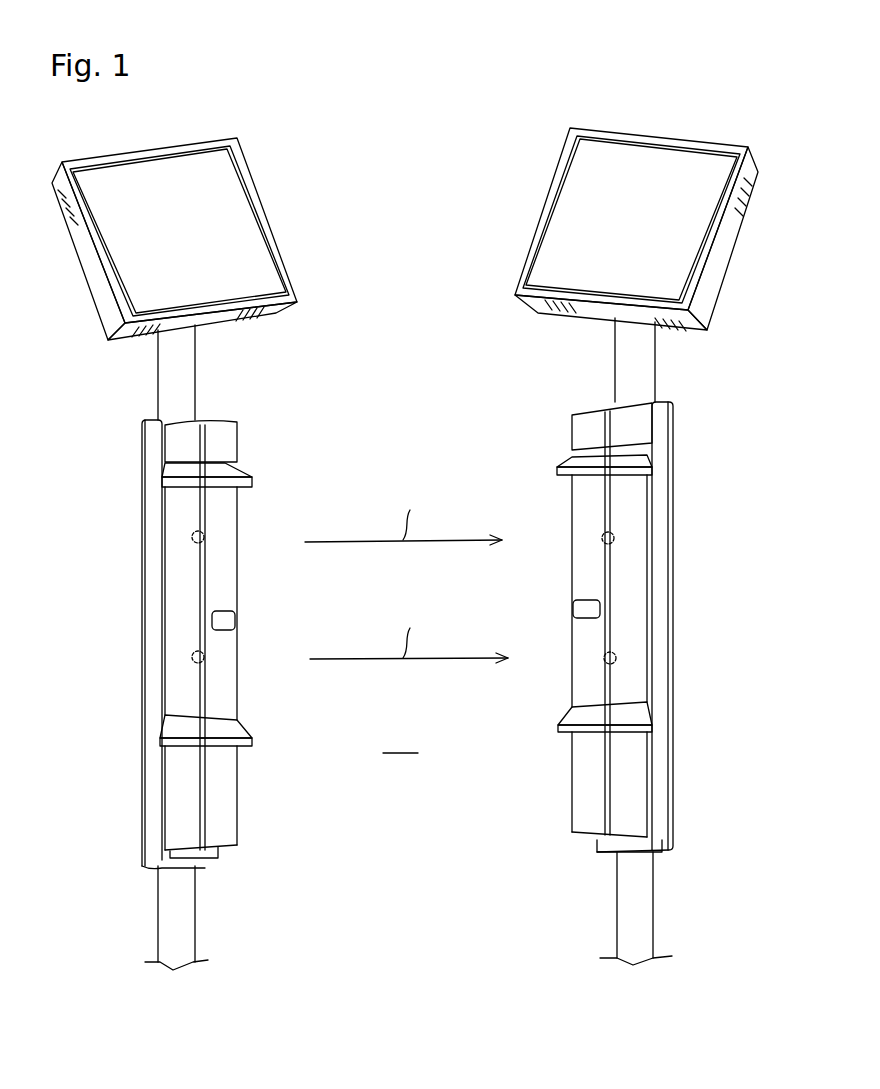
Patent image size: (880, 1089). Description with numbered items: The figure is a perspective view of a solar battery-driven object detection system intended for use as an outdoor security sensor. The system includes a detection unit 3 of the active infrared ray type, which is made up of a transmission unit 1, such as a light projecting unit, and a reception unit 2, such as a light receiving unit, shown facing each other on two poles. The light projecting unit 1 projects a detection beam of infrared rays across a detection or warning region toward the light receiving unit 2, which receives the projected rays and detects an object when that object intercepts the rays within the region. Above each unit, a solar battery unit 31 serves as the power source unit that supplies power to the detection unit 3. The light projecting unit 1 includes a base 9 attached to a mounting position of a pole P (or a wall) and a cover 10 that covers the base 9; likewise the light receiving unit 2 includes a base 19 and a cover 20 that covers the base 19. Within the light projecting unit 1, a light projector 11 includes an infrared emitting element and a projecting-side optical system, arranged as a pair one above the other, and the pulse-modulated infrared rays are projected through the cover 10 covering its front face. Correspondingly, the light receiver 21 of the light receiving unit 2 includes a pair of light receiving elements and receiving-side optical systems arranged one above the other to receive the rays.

The transmission unit 1 is at (194, 658).
The reception unit 2 is at (611, 652).
The detection unit 3 is at (414, 178).
The base 9 is at (152, 493).
The cover 10 is at (228, 512).
The light projector 11 is at (192, 537).
The base 19 is at (660, 497).
The cover 20 is at (578, 502).
The light receiver 21 is at (615, 537).
The solar battery unit 31 is at (227, 220).
The pole P is at (187, 373).